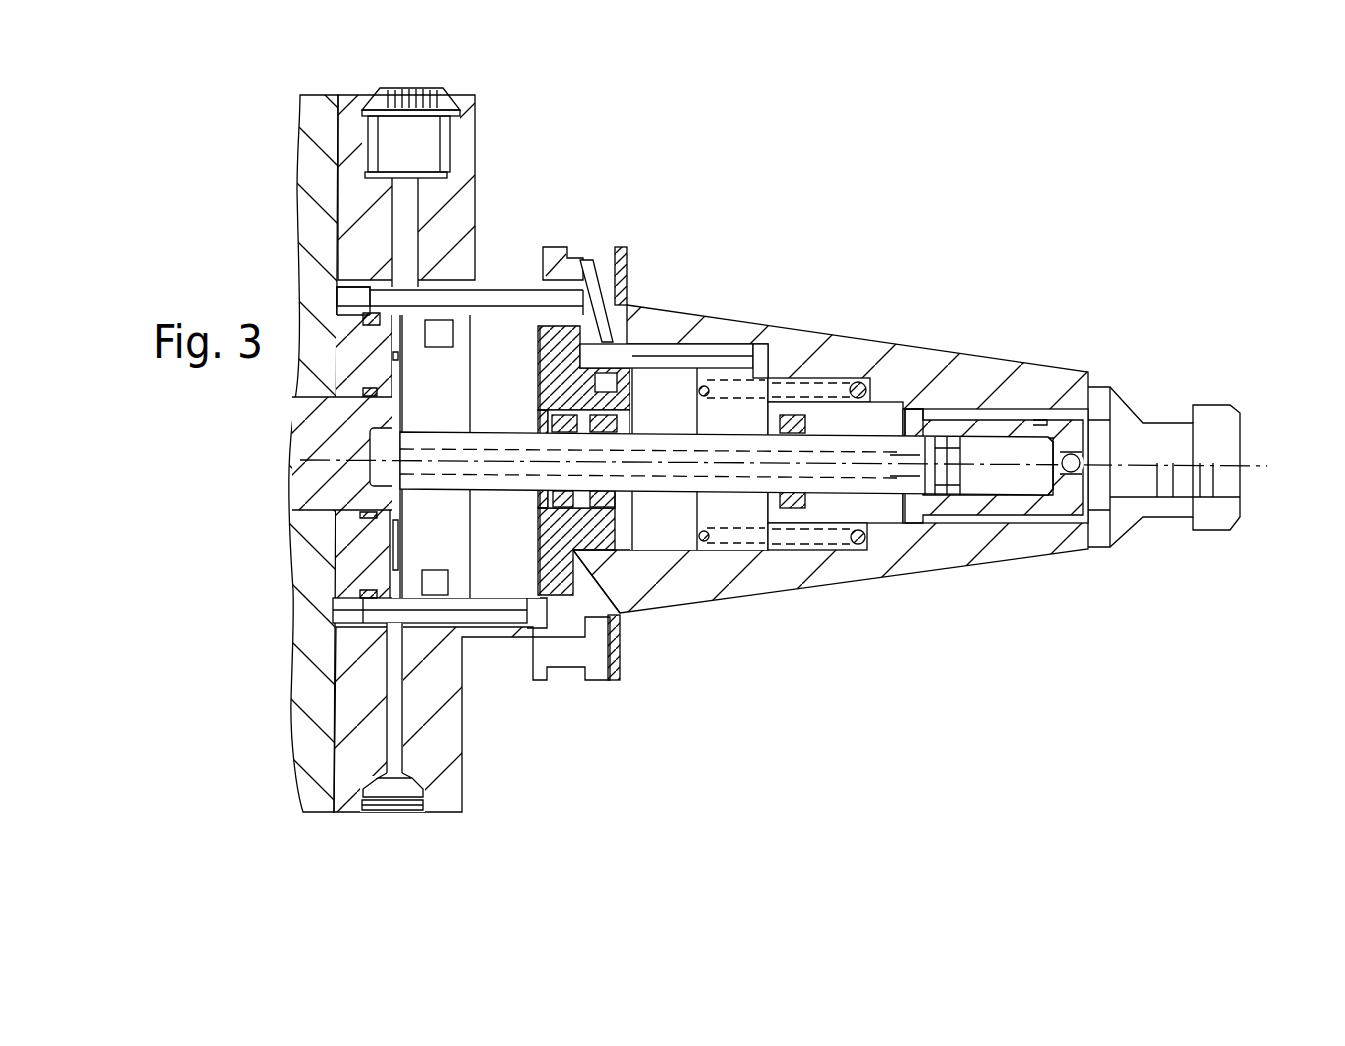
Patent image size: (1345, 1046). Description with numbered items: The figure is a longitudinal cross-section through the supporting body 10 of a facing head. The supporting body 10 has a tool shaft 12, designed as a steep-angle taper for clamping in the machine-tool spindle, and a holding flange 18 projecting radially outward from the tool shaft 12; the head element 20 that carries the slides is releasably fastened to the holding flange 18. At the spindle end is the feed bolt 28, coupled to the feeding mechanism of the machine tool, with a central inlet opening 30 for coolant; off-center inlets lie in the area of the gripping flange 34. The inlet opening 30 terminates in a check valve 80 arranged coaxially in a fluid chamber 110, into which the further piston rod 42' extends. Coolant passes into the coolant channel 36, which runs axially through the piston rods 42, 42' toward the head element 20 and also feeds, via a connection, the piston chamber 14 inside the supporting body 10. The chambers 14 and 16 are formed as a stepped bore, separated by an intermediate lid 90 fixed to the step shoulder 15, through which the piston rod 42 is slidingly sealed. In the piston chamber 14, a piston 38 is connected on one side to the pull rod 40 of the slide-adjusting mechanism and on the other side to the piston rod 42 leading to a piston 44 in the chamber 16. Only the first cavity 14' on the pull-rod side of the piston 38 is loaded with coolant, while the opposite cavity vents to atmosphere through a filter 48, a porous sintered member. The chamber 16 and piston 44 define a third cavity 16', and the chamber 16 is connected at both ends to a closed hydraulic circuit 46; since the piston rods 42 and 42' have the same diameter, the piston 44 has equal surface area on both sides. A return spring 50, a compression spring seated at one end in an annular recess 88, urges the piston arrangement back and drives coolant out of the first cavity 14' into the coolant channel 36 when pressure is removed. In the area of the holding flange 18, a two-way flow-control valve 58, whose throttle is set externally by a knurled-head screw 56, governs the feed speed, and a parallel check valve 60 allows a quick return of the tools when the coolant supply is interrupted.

The supporting body 10 is at (824, 568).
The tool shaft 12 is at (933, 543).
The piston chamber 14 is at (783, 636).
The first cavity 14' is at (459, 373).
The step shoulder 15 is at (623, 640).
The chamber 16 is at (789, 382).
The third cavity 16' is at (674, 381).
The holding flange 18 is at (432, 760).
The head element 20 is at (312, 763).
The feed bolt 28 is at (1240, 422).
The inlet opening 30 is at (1220, 480).
The gripping flange 34 is at (547, 662).
The coolant channel 36 is at (917, 428).
The piston 38 is at (458, 328).
The pull rod 40 is at (322, 434).
The piston rod 42 is at (584, 362).
The further piston rod 42' is at (879, 557).
The piston 44 is at (681, 400).
The closed hydraulic circuit 46 is at (712, 355).
The filter 48 is at (407, 797).
The return spring 50 is at (858, 385).
The knurled-head screw 56 is at (412, 86).
The two-way flow-control valve 58 is at (402, 208).
The check valve 60 is at (353, 296).
The check valve 80 is at (1072, 452).
The annular recess 88 is at (838, 378).
The intermediate lid 90 is at (575, 572).
The fluid chamber 110 is at (1027, 477).